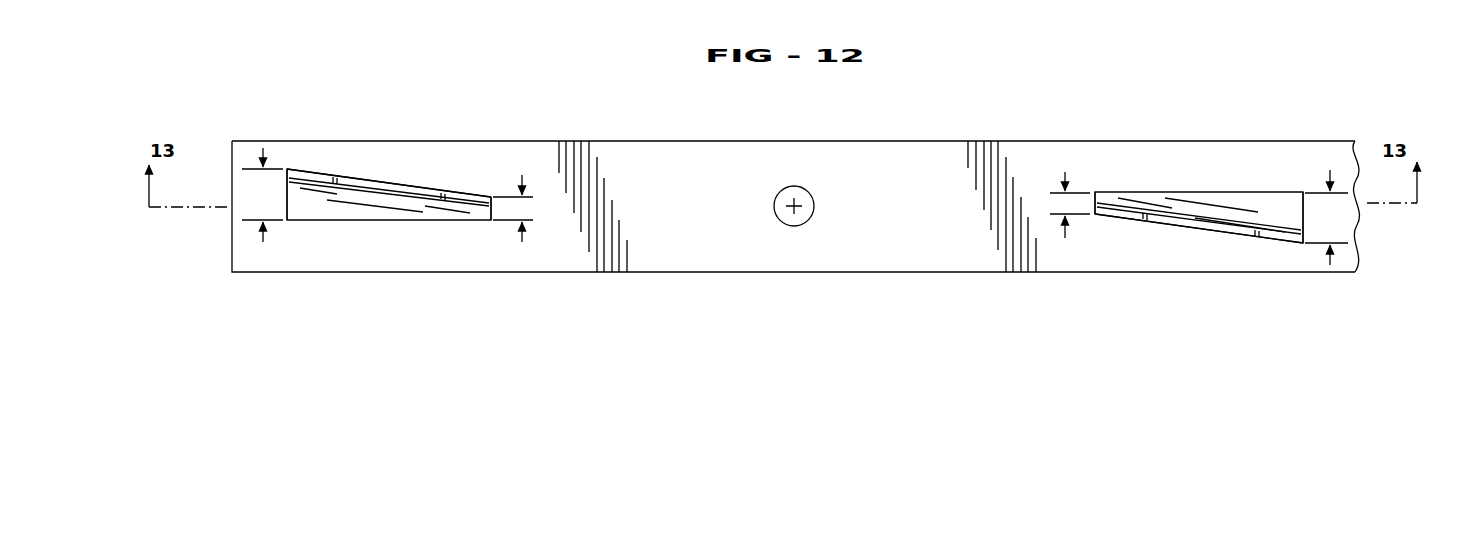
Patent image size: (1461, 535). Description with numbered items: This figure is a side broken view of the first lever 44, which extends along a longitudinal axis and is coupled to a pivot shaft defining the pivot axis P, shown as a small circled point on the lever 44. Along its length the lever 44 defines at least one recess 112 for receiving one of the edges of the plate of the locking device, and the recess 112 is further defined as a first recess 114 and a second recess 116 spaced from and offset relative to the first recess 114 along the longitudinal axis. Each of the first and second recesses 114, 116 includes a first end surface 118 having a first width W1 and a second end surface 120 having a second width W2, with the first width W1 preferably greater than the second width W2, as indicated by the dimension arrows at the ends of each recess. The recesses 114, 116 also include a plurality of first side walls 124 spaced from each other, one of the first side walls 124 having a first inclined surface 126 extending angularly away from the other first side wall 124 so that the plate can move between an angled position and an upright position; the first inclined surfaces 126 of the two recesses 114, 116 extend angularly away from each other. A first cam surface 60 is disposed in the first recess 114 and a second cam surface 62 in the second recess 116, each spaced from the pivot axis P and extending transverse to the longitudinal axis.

The recess 112 is at (288, 283).
The first recess 114 is at (402, 222).
The second recess 116 is at (1193, 190).
The first end surface 118 is at (284, 209).
The second end surface 120 is at (463, 221).
The first side walls 124 is at (392, 188).
The first inclined surface 126 is at (360, 183).
The first cam surface 60 is at (450, 207).
The second cam surface 62 is at (1223, 196).
The first lever 44 is at (700, 244).
The pivot axis P is at (808, 227).
The first width W1 is at (1388, 296).
The second width W2 is at (522, 175).